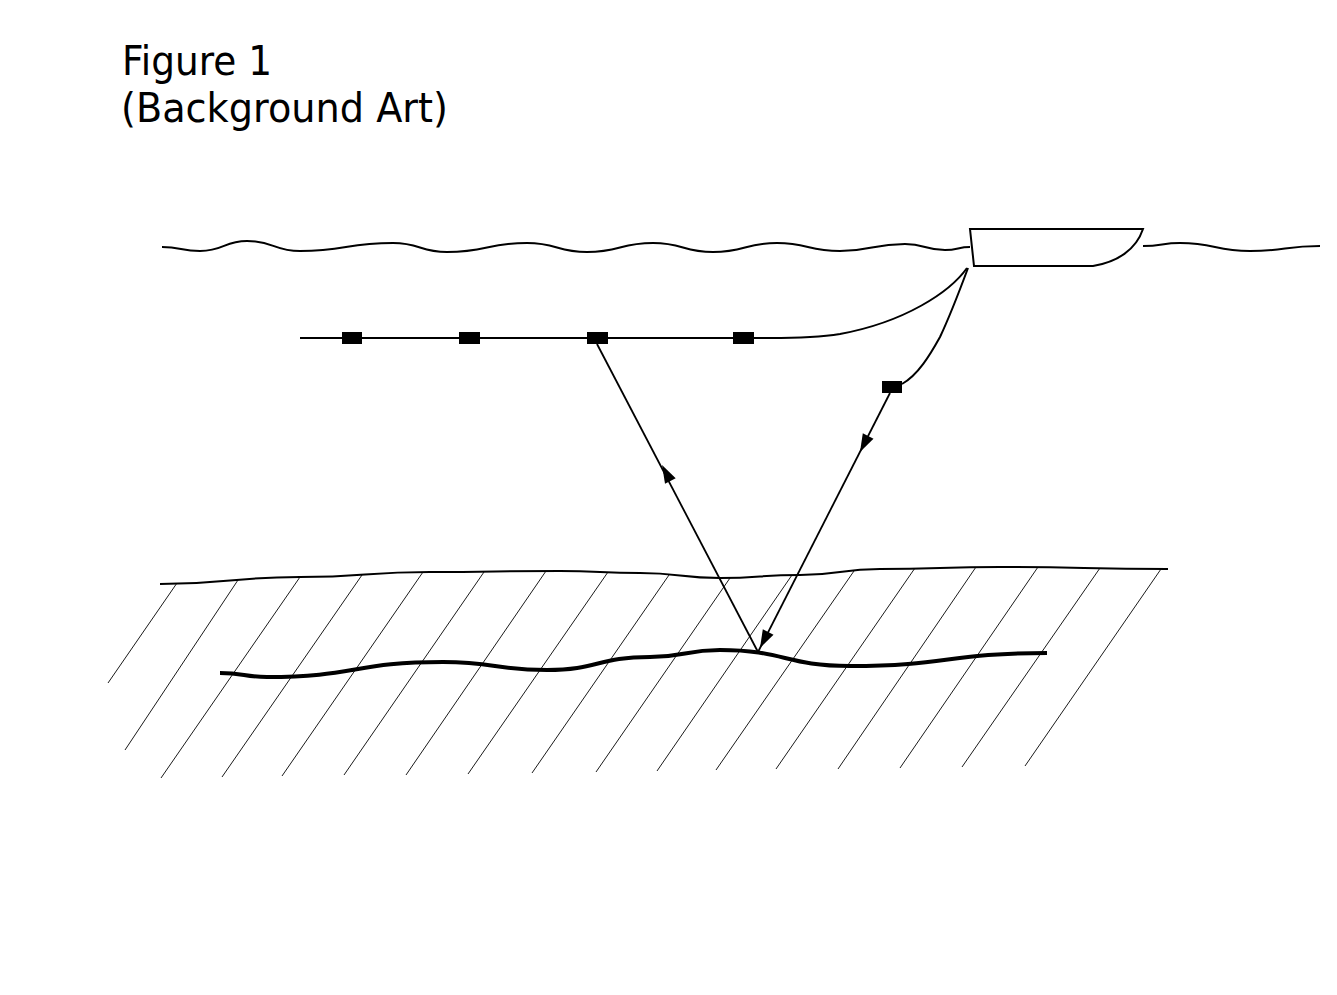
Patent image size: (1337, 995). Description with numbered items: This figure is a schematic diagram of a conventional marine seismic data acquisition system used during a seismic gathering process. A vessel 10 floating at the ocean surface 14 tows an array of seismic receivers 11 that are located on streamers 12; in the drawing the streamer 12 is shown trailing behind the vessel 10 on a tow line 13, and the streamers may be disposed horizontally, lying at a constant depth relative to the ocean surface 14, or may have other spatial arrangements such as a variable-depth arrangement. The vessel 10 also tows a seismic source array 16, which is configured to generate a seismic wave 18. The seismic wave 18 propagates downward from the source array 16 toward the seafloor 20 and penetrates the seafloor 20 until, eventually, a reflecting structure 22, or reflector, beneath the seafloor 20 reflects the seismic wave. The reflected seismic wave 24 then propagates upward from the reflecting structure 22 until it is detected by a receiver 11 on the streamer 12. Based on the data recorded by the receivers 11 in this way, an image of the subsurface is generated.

The vessel 10 is at (1140, 183).
The seismic receivers 11 is at (352, 344).
The streamers 12 is at (663, 340).
The tow cable 13 is at (908, 316).
The ocean surface 14 is at (212, 248).
The seismic source array 16 is at (897, 394).
The seismic wave 18 is at (837, 497).
The seafloor 20 is at (1047, 569).
The reflecting structure 22 is at (895, 665).
The reflected seismic wave 24 is at (633, 418).